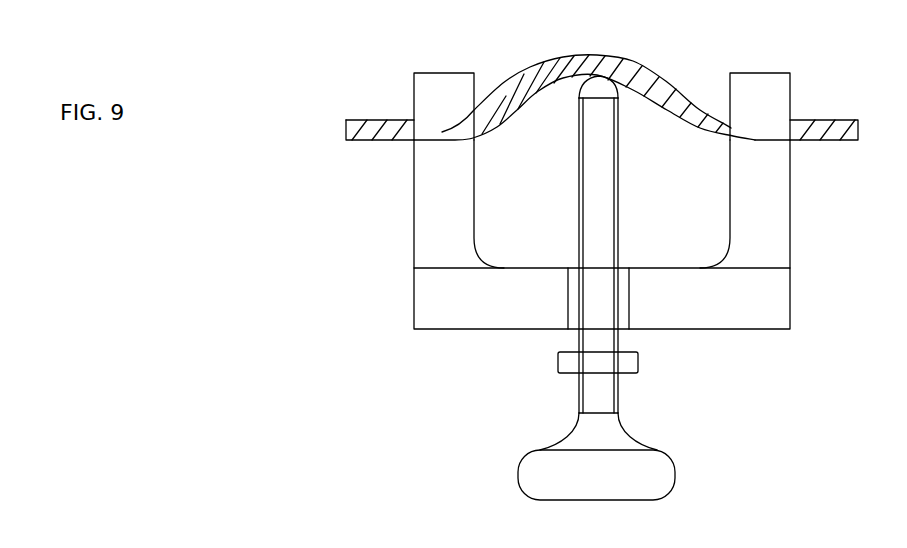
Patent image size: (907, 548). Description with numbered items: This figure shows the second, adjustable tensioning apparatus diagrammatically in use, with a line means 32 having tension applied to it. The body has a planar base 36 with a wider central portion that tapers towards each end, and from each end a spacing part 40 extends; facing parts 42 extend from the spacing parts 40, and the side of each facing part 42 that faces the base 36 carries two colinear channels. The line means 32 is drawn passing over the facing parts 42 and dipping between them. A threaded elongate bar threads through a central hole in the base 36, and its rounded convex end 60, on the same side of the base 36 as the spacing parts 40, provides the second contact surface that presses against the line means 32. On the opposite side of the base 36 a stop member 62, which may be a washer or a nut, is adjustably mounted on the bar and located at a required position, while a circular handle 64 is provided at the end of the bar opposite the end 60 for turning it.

The line means 32 is at (517, 97).
The base 36 is at (733, 300).
The spacing parts 40 is at (438, 198).
The facing parts 42 is at (423, 90).
The rounded convex end 60 is at (628, 80).
The stop member 62 is at (623, 363).
The circular handle 64 is at (650, 480).